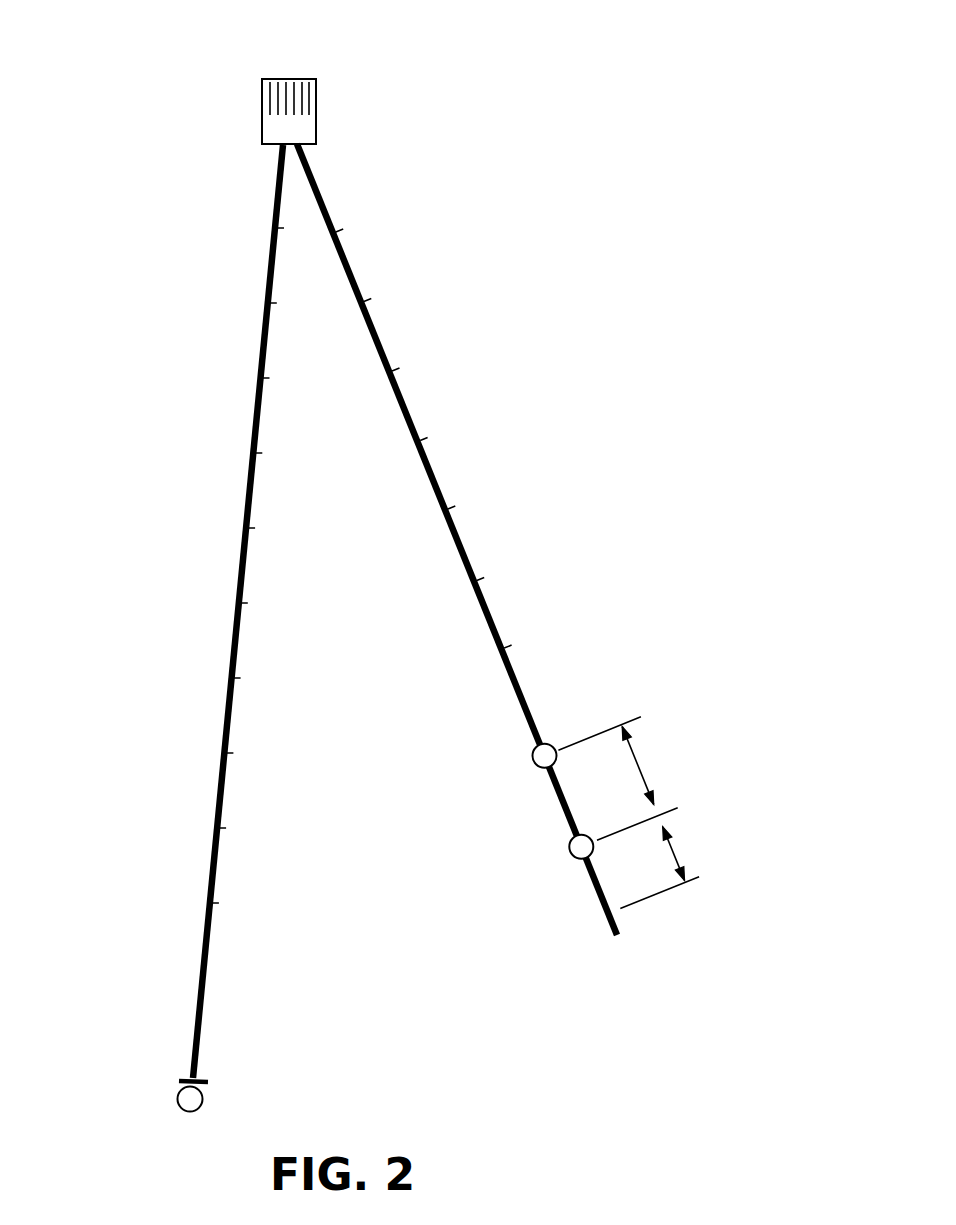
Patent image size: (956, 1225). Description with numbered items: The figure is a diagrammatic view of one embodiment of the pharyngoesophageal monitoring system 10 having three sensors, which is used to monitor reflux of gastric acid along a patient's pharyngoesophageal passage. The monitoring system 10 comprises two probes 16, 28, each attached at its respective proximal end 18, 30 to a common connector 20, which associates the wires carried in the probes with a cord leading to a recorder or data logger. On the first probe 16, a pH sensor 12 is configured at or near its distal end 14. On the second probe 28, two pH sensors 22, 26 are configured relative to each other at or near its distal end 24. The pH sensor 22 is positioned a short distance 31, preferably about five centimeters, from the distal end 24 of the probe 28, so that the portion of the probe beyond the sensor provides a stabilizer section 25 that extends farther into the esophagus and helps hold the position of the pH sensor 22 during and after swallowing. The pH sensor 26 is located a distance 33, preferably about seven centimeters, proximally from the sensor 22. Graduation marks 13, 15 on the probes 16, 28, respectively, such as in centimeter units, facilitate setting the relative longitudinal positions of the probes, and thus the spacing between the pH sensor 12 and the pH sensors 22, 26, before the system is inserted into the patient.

The pharyngoesophageal monitoring system 10 is at (164, 179).
The pH sensor 12 is at (203, 1099).
The graduation marks 13 is at (230, 752).
The distal end 14 is at (188, 1075).
The graduation marks 15 is at (507, 647).
The probe 16 is at (233, 634).
The proximal end 18 is at (274, 153).
The connector 20 is at (316, 103).
The pH sensor 22 is at (569, 856).
The distal end 24 is at (613, 940).
The stabilizer section 25 is at (592, 895).
The pH sensor 26 is at (553, 743).
The probe 28 is at (436, 475).
The proximal end 30 is at (306, 152).
The distance 31 is at (674, 854).
The distance 33 is at (638, 766).